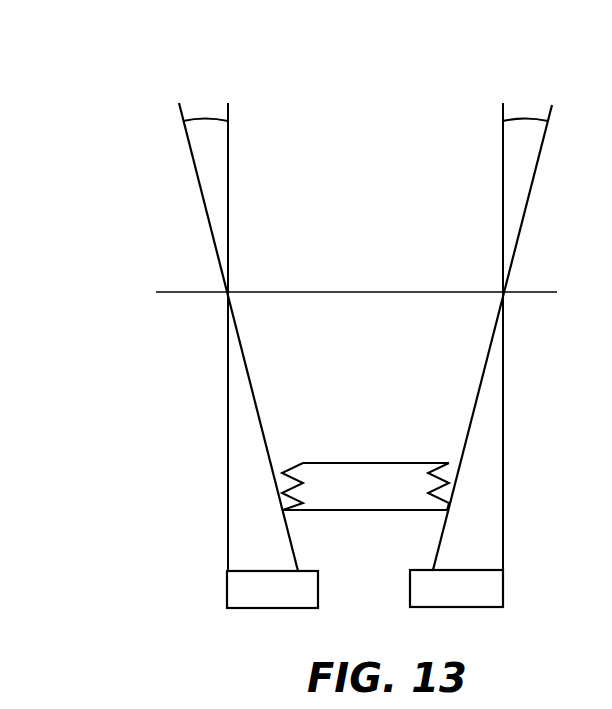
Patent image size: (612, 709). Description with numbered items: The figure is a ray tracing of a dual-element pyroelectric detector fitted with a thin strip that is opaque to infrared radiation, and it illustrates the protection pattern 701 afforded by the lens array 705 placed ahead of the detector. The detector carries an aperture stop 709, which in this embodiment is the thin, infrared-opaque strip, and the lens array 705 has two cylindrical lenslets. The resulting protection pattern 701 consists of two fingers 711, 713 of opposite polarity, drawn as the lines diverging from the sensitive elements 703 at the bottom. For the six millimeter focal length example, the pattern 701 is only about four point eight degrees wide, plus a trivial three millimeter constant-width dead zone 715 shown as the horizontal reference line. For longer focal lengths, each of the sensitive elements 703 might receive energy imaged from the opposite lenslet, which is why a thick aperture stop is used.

The protection pattern 701 is at (85, 52).
The sensitive elements 703 is at (227, 589).
The lens array 705 is at (226, 298).
The aperture stop 709 is at (384, 462).
The finger 711 is at (192, 159).
The finger 713 is at (502, 159).
The dead zone 715 is at (385, 268).